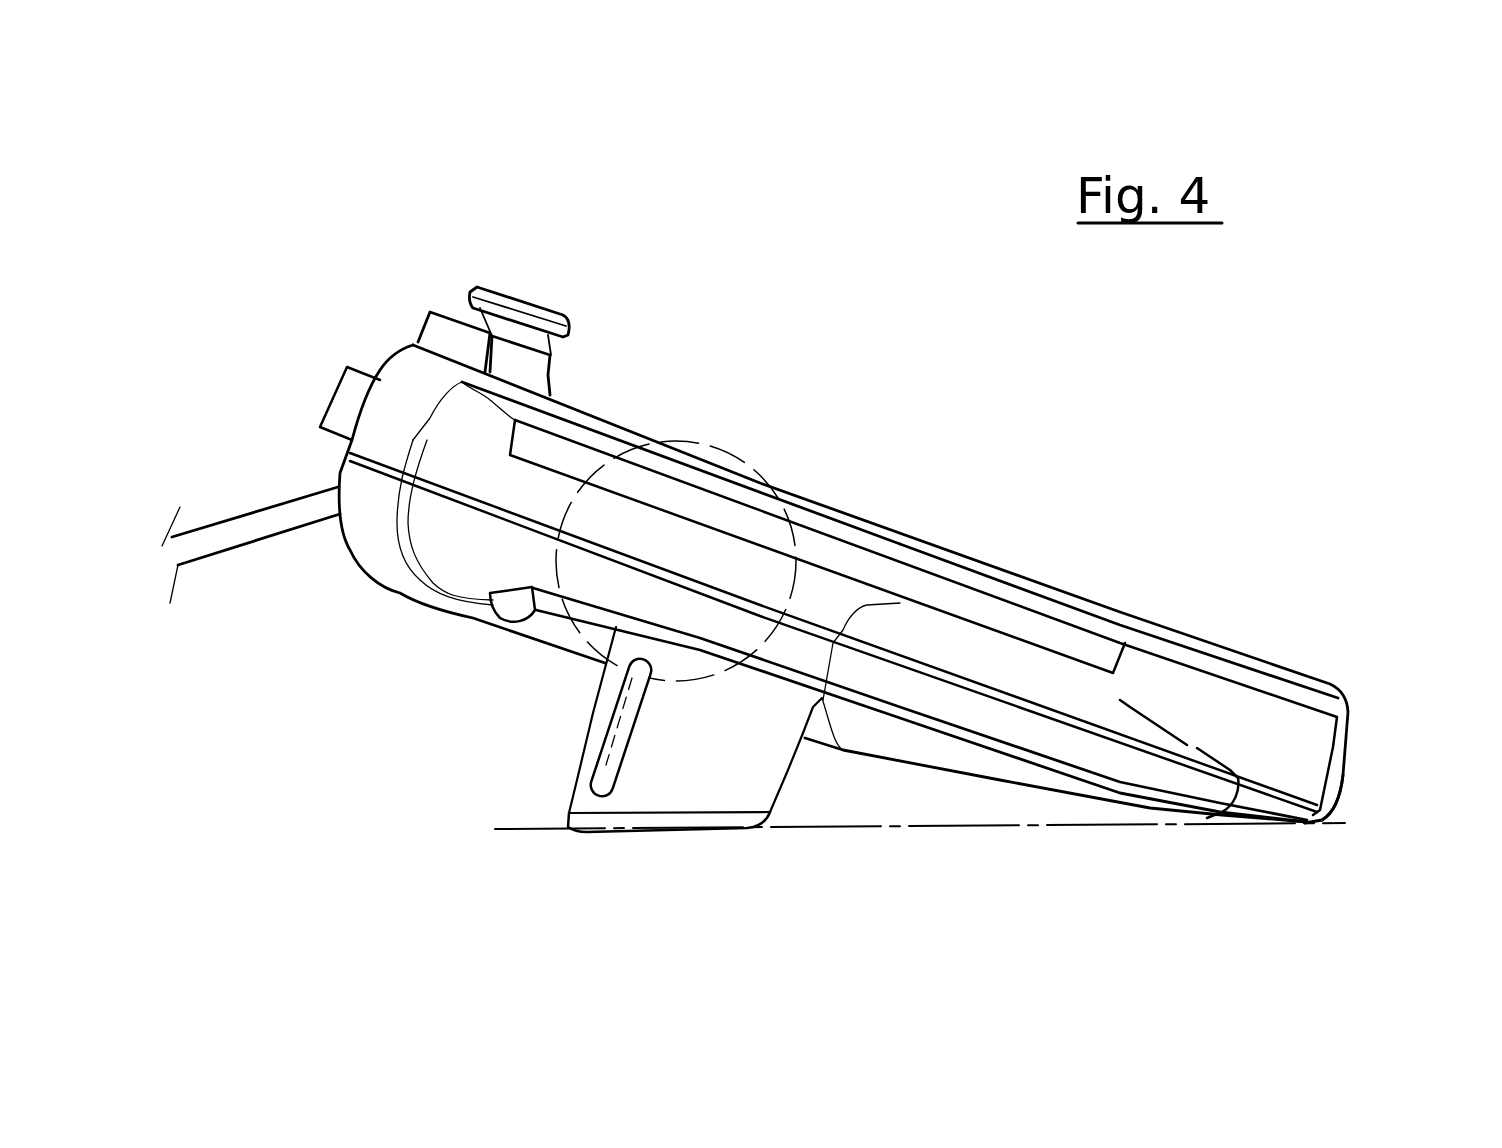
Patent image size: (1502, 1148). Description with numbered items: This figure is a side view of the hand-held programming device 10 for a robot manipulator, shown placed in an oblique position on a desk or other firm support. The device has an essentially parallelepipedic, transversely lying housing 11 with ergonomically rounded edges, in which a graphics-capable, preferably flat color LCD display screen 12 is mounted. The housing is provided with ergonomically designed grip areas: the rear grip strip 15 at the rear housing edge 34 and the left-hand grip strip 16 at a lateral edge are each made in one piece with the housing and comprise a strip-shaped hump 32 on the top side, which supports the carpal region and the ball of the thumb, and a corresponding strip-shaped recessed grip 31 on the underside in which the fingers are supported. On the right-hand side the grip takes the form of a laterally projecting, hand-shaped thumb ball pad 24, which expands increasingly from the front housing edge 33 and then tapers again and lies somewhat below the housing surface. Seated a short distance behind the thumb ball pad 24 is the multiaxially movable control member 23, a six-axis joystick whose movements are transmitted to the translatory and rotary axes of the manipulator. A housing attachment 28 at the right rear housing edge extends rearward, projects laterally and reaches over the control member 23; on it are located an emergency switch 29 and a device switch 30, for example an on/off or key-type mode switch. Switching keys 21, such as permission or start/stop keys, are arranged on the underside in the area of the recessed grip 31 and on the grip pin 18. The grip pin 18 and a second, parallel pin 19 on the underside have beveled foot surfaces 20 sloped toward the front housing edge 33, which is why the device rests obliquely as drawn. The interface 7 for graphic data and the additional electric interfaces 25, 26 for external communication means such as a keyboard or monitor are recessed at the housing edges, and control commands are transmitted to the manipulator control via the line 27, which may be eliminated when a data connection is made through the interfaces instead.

The interface 7 is at (286, 367).
The programming device 10 is at (630, 325).
The housing 11 is at (1313, 678).
The display screen 12 is at (818, 543).
The rear grip strip 15 is at (472, 403).
The left-hand grip strip 16 is at (945, 550).
The grip pin 18 is at (653, 720).
The second pin 19 is at (600, 692).
The beveled foot surface 20 is at (667, 813).
The switching key 21 is at (500, 608).
The control member 23 is at (710, 445).
The thumb ball pad 24 is at (1125, 695).
The electric interface 25 is at (286, 367).
The electric interface 26 is at (340, 397).
The line 27 is at (265, 517).
The housing attachment 28 is at (413, 345).
The emergency switch 29 is at (510, 310).
The device switch 30 is at (435, 328).
The recessed grip 31 is at (481, 590).
The hump 32 is at (784, 465).
The front housing edge 33 is at (1336, 787).
The rear housing edge 34 is at (342, 472).